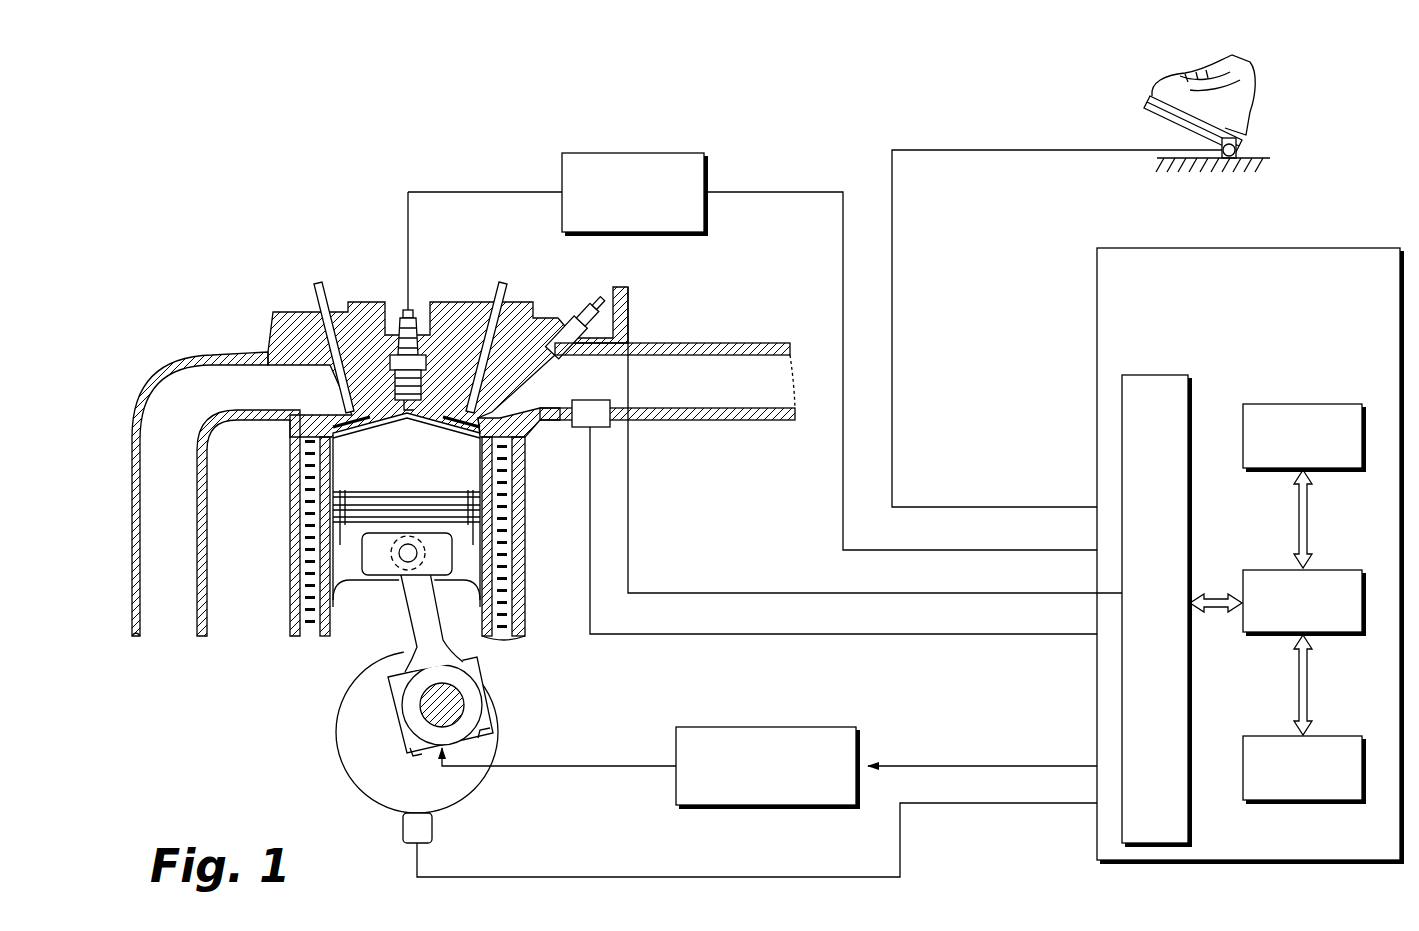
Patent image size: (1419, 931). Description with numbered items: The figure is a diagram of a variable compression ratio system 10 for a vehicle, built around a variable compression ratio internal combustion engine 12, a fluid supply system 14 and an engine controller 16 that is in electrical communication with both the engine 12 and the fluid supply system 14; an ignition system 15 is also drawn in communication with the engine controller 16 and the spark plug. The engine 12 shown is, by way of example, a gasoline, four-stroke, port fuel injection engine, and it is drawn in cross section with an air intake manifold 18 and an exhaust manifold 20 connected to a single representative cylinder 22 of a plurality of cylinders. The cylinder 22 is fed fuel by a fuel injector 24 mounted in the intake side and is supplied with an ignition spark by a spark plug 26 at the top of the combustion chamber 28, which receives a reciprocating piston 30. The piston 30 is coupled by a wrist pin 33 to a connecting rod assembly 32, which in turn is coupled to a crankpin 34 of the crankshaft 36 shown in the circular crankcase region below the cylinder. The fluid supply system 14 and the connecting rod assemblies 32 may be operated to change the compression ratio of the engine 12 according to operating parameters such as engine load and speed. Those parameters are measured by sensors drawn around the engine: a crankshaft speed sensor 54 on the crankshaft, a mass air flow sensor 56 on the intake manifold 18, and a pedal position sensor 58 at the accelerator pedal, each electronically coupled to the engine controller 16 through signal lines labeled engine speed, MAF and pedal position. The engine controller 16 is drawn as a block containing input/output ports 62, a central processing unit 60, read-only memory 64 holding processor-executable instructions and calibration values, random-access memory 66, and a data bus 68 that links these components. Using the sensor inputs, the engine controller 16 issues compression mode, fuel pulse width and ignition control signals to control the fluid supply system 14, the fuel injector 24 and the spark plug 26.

The variable compression ratio system 10 is at (792, 141).
The variable compression ratio internal combustion engine 12 is at (190, 668).
The fluid supply system 14 is at (813, 727).
The ignition system 15 is at (647, 153).
The engine controller 16 is at (1306, 248).
The air intake manifold 18 is at (693, 375).
The exhaust manifold 20 is at (190, 392).
The cylinder 22 is at (288, 668).
The fuel injector 24 is at (583, 303).
The spark plug 26 is at (402, 316).
The combustion chamber 28 is at (505, 628).
The piston 30 is at (482, 470).
The connecting rod assembly 32 is at (392, 627).
The wrist pin 33 is at (400, 570).
The crankpin 34 is at (478, 710).
The crankshaft 36 is at (335, 738).
The crankshaft speed sensor 54 is at (404, 828).
The mass air flow sensor 56 is at (580, 428).
The pedal position sensor 58 is at (1243, 150).
The central processing unit 60 is at (1323, 633).
The input/output ports 62 is at (1190, 398).
The read-only memory 64 is at (1320, 470).
The random-access memory 66 is at (1323, 801).
The data bus 68 is at (1296, 503).